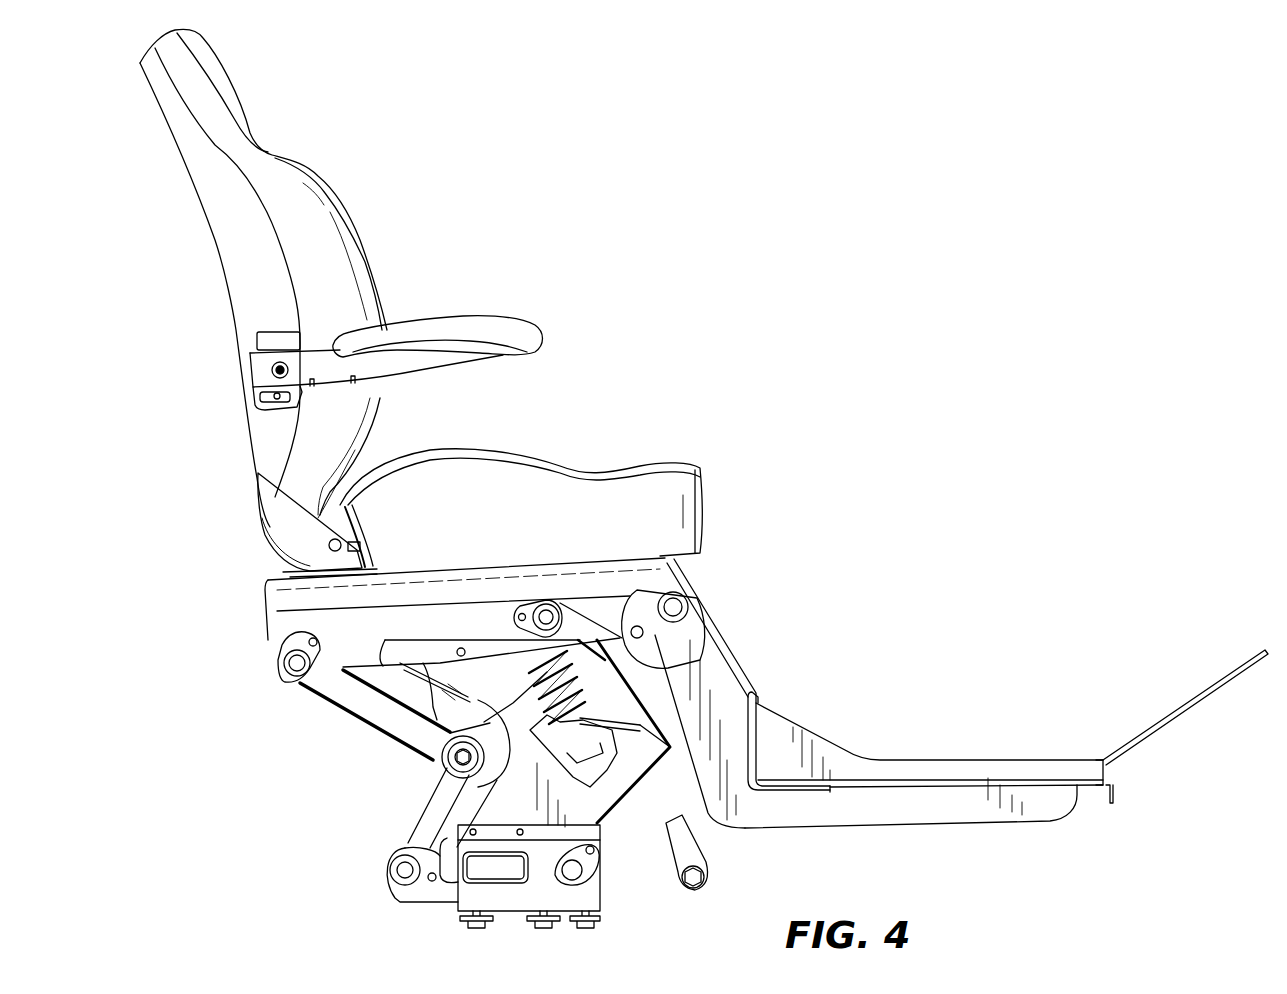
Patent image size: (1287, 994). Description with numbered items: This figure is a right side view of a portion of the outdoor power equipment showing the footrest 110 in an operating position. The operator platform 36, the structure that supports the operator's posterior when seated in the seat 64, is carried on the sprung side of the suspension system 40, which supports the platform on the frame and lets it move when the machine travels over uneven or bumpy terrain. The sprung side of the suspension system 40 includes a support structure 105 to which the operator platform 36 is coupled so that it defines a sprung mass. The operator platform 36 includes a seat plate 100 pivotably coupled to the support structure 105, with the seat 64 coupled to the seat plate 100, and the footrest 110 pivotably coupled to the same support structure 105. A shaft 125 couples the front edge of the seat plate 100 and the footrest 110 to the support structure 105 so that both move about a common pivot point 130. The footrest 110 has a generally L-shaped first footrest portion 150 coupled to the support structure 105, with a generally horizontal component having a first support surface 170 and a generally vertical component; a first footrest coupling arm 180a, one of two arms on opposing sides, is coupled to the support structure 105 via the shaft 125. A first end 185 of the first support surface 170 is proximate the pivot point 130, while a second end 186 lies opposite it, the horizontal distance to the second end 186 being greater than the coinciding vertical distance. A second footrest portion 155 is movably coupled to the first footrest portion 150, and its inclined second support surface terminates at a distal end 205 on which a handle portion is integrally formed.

The operator platform 36 is at (678, 403).
The suspension system 40 is at (401, 796).
The seat 64 is at (193, 152).
The seat plate 100 is at (578, 580).
The support structure 105 is at (343, 667).
The footrest 110 is at (735, 626).
The shaft 125 is at (490, 638).
The pivot point 130 is at (445, 762).
The first footrest portion 150 is at (820, 748).
The second footrest portion 155 is at (1113, 763).
The first support surface 170 is at (981, 777).
The first footrest coupling arm 180a is at (950, 812).
The first end of the first support surface 185 is at (742, 803).
The second end of the first support surface 186 is at (1113, 779).
The distal end of the second support surface 205 is at (1233, 668).